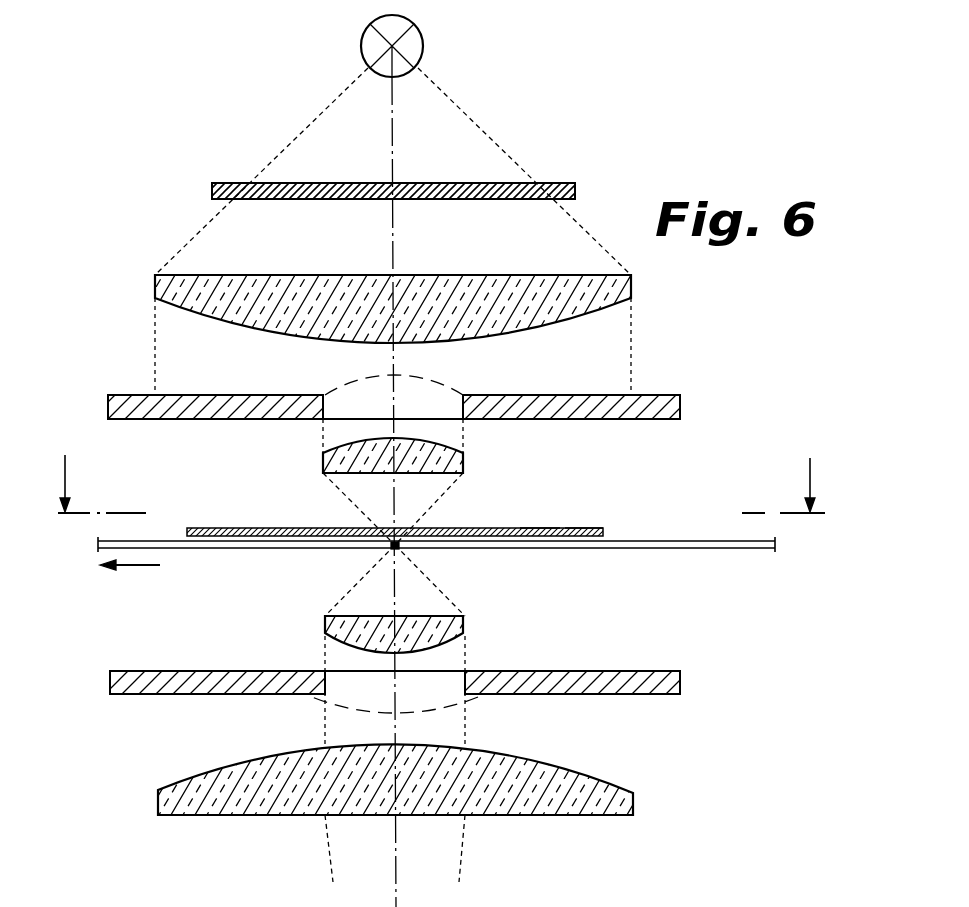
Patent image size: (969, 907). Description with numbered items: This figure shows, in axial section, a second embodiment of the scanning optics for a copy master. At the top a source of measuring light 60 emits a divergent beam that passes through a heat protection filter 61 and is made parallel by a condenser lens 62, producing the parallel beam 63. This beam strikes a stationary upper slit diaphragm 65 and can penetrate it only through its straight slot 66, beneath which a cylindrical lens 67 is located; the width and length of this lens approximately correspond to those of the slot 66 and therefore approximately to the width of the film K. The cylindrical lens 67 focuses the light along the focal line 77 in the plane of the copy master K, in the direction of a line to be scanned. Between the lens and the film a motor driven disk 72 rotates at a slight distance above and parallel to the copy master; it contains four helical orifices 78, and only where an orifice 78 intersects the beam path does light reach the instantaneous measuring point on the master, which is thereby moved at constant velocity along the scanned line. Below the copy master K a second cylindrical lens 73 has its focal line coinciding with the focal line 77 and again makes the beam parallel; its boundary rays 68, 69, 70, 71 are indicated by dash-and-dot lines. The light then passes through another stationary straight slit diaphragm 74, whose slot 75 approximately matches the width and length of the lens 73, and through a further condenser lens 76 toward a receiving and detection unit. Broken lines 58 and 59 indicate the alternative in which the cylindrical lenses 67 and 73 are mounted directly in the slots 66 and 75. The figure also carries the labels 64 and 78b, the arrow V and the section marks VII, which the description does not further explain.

The broken line 58 is at (440, 385).
The broken line 59 is at (452, 700).
The source of measuring light 60 is at (415, 46).
The heat protection filter 61 is at (490, 183).
The condenser lens 62 is at (633, 284).
The parallel beam 63 is at (634, 348).
The beam path 64 is at (465, 433).
The stationary upper slit diaphragm 65 is at (620, 405).
The slot 66 is at (337, 412).
The cylindrical lens 67 is at (465, 474).
The boundary ray 68 is at (438, 508).
The boundary ray 69 is at (347, 502).
The boundary ray 70 is at (455, 598).
The boundary ray 71 is at (355, 580).
The motor driven disk 72 is at (543, 528).
The second cylindrical lens 73 is at (465, 628).
The slit diaphragm 74 is at (647, 698).
The slot 75 is at (348, 692).
The condenser lens 76 is at (635, 805).
The focal line 77 is at (396, 550).
The orifice 78 is at (206, 530).
The scanning grating field 78b is at (585, 528).
The copy master K is at (164, 543).
The direction of movement V is at (140, 572).
The section line VII- VII is at (441, 495).